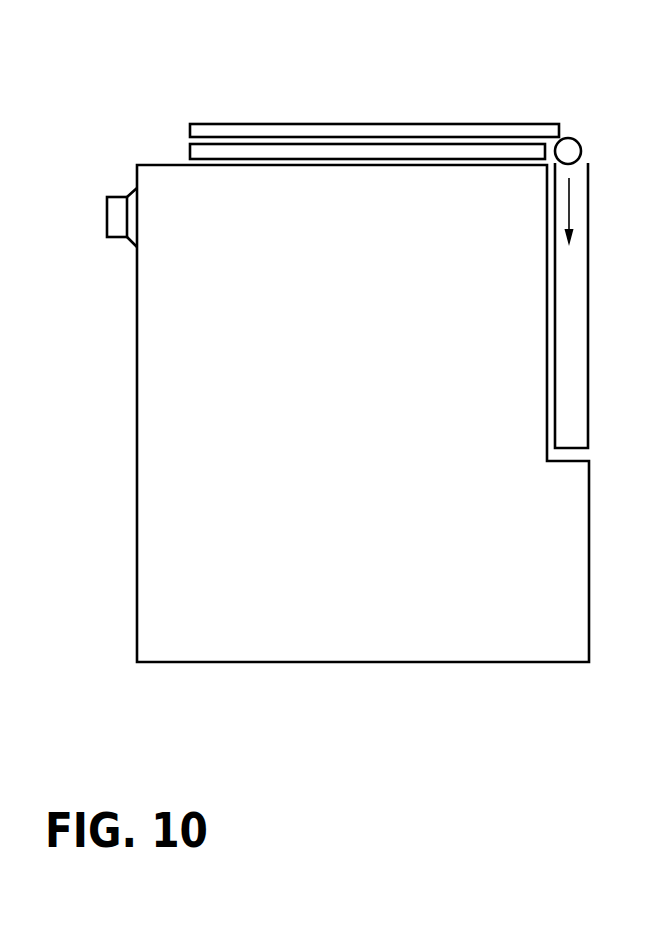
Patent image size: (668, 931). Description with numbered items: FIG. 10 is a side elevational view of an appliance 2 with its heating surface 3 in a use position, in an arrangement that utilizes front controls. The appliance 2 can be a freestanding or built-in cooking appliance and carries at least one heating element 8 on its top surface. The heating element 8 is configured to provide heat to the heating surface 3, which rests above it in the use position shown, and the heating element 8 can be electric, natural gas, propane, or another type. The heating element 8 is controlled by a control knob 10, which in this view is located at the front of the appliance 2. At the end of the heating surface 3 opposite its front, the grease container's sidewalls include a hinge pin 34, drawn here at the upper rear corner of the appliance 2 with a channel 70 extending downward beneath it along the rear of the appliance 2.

The appliance 2 is at (165, 475).
The heating surface 3 is at (330, 123).
The heating element 8 is at (192, 150).
The control knob 10 is at (112, 208).
The hinge pin 34 is at (573, 152).
The channel 70 is at (573, 322).